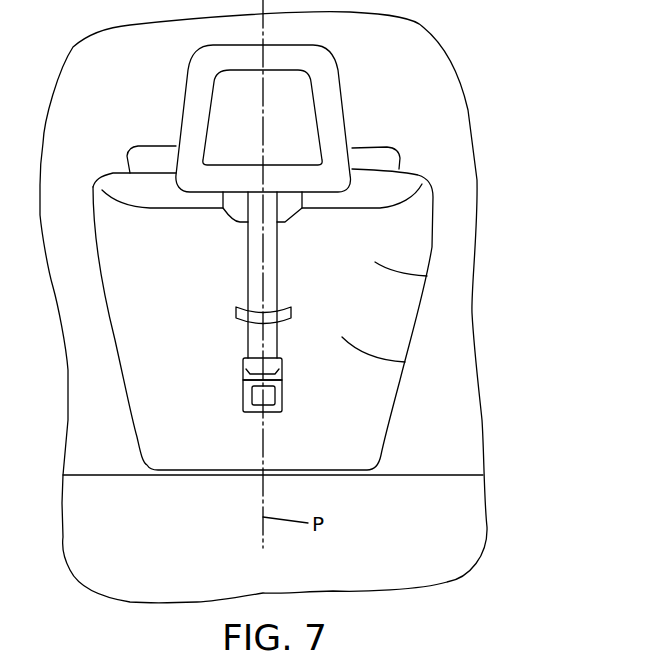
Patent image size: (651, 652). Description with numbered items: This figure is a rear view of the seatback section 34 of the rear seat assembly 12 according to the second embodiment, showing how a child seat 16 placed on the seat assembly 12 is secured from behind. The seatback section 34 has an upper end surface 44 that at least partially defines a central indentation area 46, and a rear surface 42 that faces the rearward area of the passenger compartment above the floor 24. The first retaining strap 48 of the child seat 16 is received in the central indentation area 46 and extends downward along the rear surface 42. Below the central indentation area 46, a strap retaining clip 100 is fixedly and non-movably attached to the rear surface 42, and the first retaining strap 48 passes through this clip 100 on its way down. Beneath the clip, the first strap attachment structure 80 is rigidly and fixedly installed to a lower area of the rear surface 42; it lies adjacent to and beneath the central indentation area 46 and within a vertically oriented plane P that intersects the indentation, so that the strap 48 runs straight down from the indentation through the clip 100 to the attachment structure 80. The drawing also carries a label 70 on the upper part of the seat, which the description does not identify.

The seat assembly 12 is at (441, 207).
The child seat 16 is at (367, 147).
The floor 24 is at (123, 540).
The seatback section 34 is at (427, 276).
The rear surface 42 is at (405, 362).
The upper end surface 44 is at (404, 185).
The central indentation area 46 is at (235, 219).
The first retaining strap 48 is at (257, 282).
The headrest 70 is at (237, 103).
The first strap attachment structure 80 is at (243, 399).
The strap retaining clip 100 is at (238, 316).